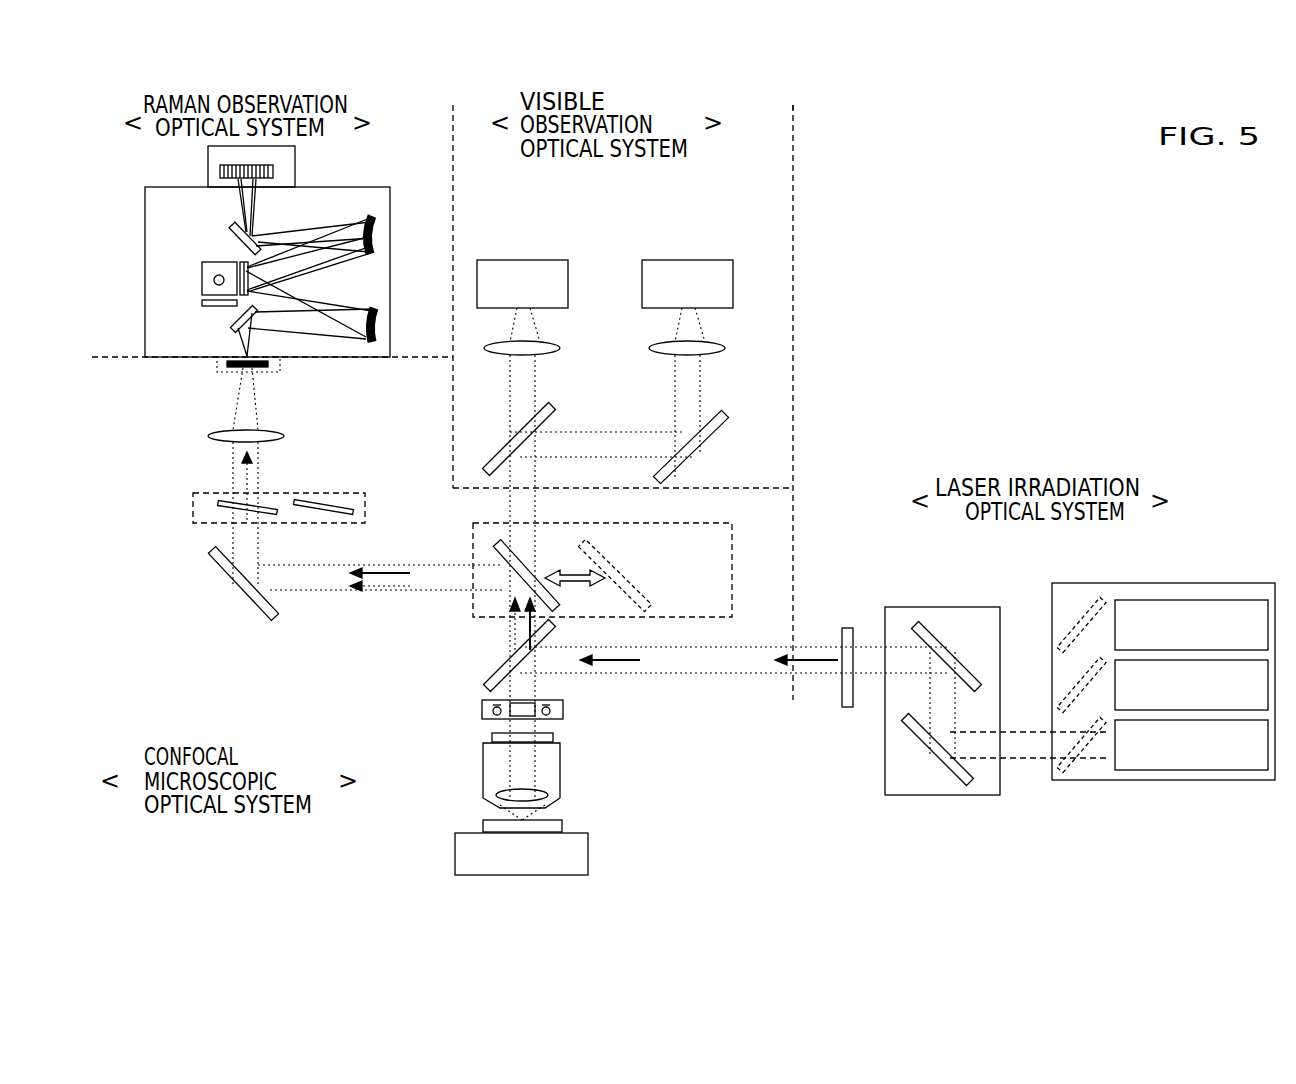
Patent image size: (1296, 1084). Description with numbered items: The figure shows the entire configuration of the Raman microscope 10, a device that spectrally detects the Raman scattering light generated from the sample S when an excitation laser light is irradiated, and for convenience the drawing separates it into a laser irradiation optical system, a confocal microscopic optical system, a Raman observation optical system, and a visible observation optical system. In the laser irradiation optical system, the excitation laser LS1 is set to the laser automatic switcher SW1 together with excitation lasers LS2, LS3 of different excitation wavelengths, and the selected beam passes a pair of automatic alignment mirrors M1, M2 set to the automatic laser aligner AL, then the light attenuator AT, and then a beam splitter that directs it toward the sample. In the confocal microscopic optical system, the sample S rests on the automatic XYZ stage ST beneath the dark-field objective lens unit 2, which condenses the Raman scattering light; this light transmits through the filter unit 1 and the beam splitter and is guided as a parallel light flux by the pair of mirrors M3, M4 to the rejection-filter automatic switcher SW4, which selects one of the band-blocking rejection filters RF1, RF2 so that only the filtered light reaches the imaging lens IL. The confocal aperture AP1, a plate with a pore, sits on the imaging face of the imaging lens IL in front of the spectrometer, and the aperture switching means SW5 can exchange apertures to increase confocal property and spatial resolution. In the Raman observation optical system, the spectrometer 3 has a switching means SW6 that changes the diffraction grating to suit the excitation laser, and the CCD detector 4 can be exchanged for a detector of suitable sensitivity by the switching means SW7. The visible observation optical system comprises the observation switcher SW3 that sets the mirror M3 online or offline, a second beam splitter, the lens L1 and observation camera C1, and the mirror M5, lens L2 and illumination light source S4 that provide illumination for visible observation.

The Raman microscope 10 is at (916, 241).
The spectrometer 3 is at (392, 274).
The CCD detector 4 is at (294, 166).
The switching means of the detector SW7 is at (208, 166).
The switching means SW6 is at (200, 276).
The aperture switching means SW5 is at (215, 362).
The confocal aperture AP1 is at (236, 370).
The imaging lens IL is at (283, 434).
The rejection-filter automatic switcher SW4 is at (366, 510).
The rejection filter RF1 is at (225, 504).
The rejection filter RF2 is at (330, 500).
The mirror M4 is at (240, 597).
The mirror M3 is at (492, 552).
The observation switcher SW3 is at (760, 523).
The mirror M5 is at (716, 438).
The observation camera C1 is at (526, 258).
The illumination light source S4 is at (690, 258).
The lens L1 is at (552, 342).
The lens L2 is at (717, 342).
The filter unit 1 is at (480, 710).
The dark-field objective lens unit 2 is at (481, 760).
The sample S is at (480, 825).
The automatic XYZ stage ST is at (590, 843).
The light attenuator AT is at (802, 713).
The automatic laser aligner AL is at (940, 797).
The automatic alignment mirror M2 is at (932, 634).
The automatic alignment mirror M1 is at (943, 757).
The laser automatic switcher SW1 is at (1172, 818).
The excitation laser LS1 is at (1191, 745).
The excitation laser LS2 is at (1191, 685).
The excitation laser LS3 is at (1191, 625).